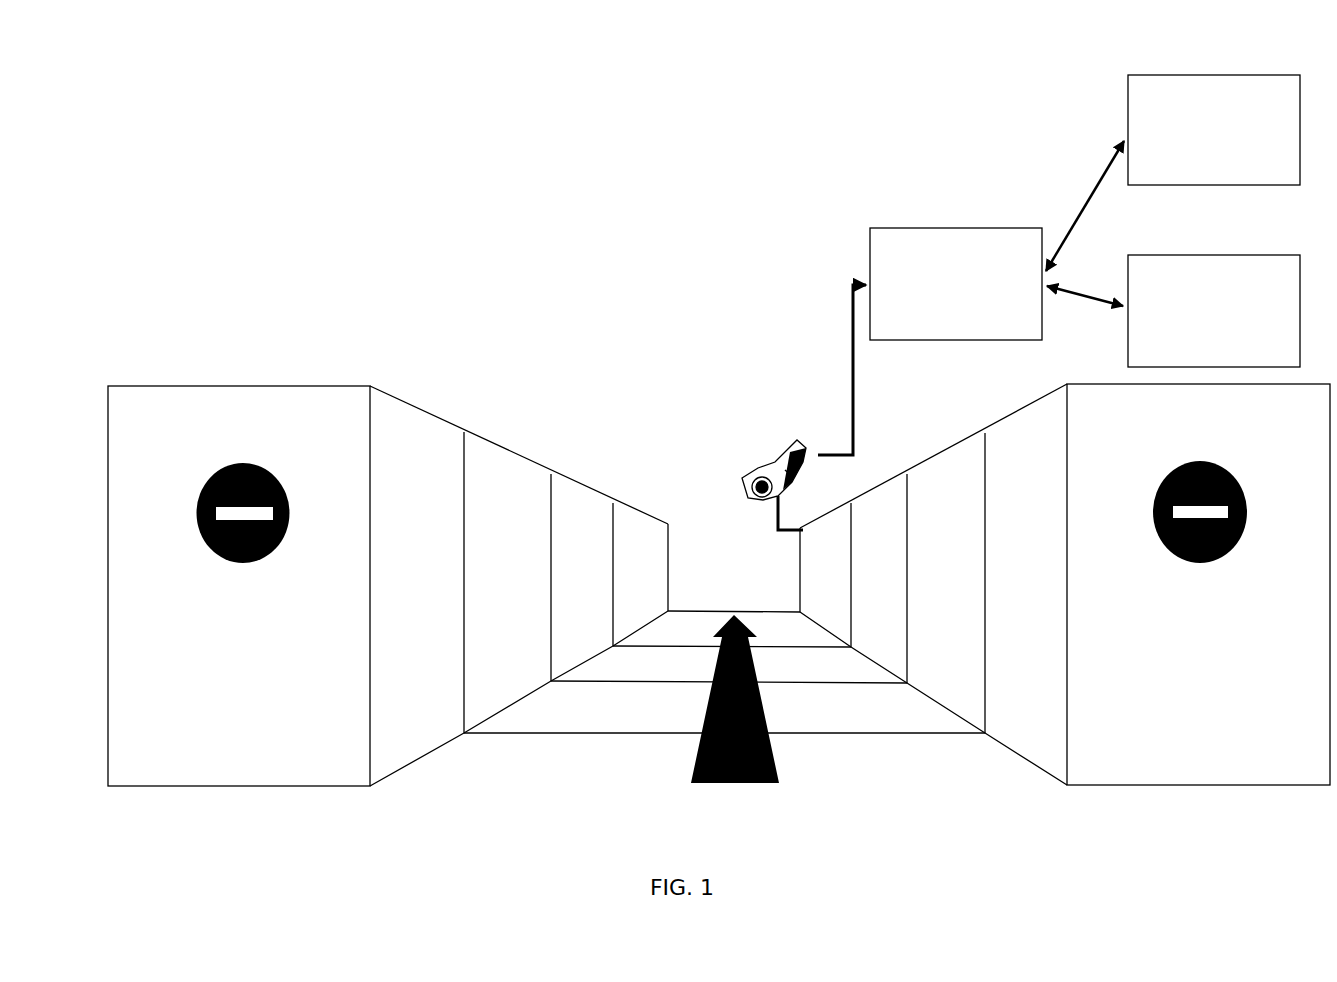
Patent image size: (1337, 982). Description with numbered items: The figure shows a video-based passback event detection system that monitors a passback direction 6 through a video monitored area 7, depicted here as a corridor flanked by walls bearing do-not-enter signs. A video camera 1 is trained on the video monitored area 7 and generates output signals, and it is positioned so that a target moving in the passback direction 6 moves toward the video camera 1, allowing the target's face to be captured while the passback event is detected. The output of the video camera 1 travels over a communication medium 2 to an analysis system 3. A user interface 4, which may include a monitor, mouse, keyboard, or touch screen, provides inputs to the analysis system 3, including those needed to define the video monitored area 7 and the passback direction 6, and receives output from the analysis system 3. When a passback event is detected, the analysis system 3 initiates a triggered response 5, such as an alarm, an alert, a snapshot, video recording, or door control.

The video camera 1 is at (790, 460).
The communication medium 2 is at (848, 363).
The analysis system 3 is at (957, 228).
The user interface 4 is at (1213, 255).
The triggered response 5 is at (1213, 75).
The passback direction 6 is at (727, 755).
The video monitored area 7 is at (740, 573).